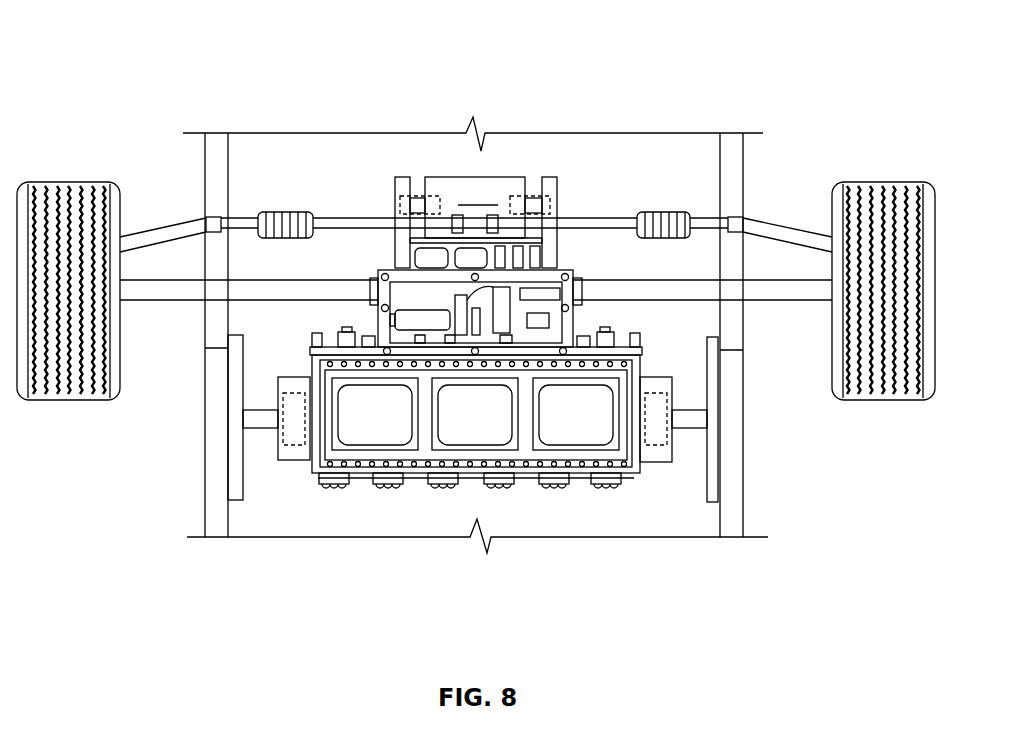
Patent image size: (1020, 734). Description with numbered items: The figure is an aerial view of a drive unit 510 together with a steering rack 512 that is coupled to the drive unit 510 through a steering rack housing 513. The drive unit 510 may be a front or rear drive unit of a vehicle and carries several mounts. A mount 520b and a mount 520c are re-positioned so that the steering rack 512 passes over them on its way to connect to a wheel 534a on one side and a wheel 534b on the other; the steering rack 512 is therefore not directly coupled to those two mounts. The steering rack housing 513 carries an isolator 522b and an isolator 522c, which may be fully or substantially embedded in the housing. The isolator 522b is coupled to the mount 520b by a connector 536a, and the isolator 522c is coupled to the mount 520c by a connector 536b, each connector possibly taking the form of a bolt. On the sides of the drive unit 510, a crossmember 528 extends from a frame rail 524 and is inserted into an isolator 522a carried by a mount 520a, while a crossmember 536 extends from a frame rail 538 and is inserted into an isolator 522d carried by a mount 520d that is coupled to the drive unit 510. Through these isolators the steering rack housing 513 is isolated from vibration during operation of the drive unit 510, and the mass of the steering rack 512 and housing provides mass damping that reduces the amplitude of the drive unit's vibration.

The drive unit 510 is at (537, 489).
The steering rack 512 is at (246, 217).
The steering rack housing 513 is at (475, 207).
The mount 520a is at (290, 462).
The mount 520b is at (394, 192).
The mount 520c is at (558, 192).
The mount 520d is at (672, 462).
The isolator 522a is at (297, 462).
The isolator 522b is at (443, 196).
The isolator 522c is at (523, 192).
The isolator 522d is at (655, 447).
The frame rail 524 is at (205, 490).
The crossmember 528 is at (262, 430).
The wheel 534a is at (65, 182).
The wheel 534b is at (880, 182).
The crossmember 536 is at (690, 430).
The connector 536a is at (417, 200).
The connector 536b is at (537, 197).
The frame rail 538 is at (743, 490).